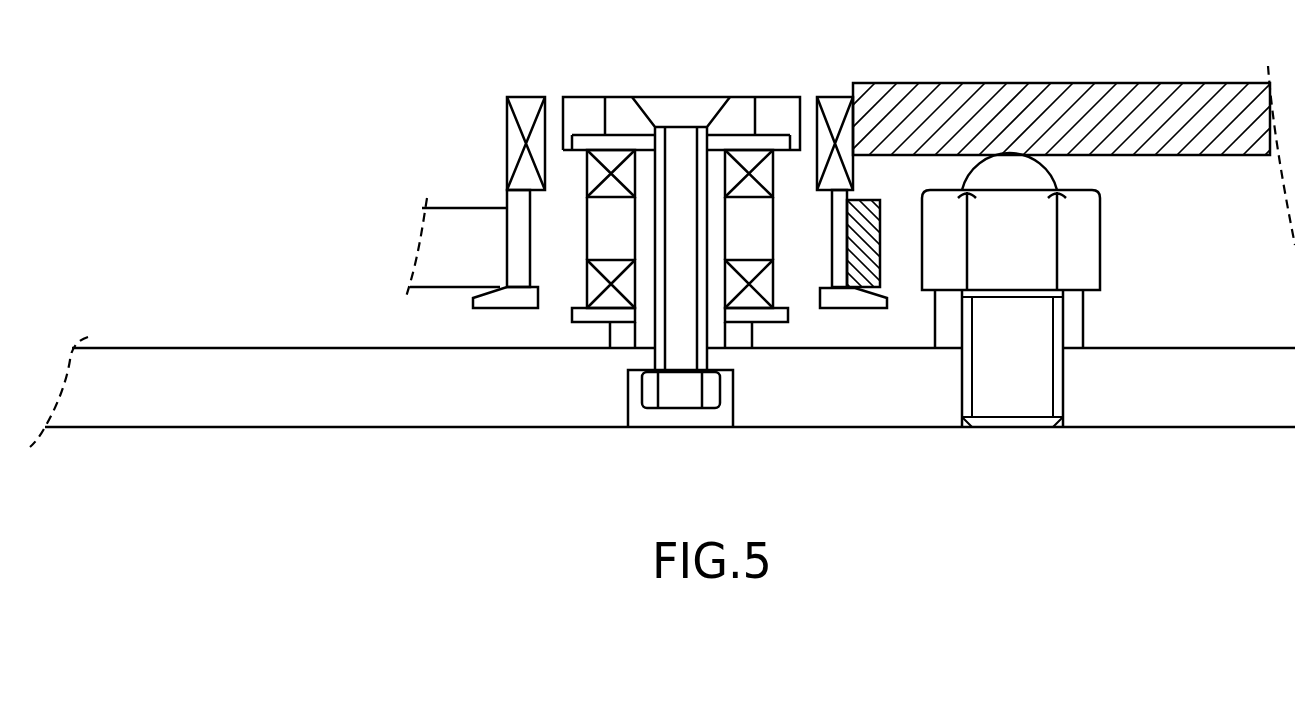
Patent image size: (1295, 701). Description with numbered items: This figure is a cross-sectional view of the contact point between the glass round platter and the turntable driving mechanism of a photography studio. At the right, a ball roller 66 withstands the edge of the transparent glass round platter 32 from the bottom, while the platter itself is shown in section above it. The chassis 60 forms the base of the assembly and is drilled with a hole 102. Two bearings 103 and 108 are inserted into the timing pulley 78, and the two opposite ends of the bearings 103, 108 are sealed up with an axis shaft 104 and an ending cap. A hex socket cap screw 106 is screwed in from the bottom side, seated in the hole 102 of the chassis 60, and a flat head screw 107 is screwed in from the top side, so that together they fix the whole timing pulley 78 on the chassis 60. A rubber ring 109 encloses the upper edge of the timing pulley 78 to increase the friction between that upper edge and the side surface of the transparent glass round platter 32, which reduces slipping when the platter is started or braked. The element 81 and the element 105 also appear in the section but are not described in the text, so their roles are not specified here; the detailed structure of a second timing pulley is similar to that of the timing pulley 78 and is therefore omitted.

The transparent glass round platter 32 is at (1065, 100).
The chassis 60 is at (238, 420).
The ball roller 66 is at (1075, 229).
The timing pulley 78 is at (563, 288).
The bracket 81 is at (453, 217).
The hole 102 is at (722, 417).
The bearing 103 is at (612, 298).
The axis shaft 104 is at (630, 333).
The housing 105 is at (617, 90).
The hex socket cap screw 106 is at (670, 388).
The flat head screw 107 is at (713, 90).
The bearing 108 is at (755, 155).
The rubber ring 109 is at (523, 85).